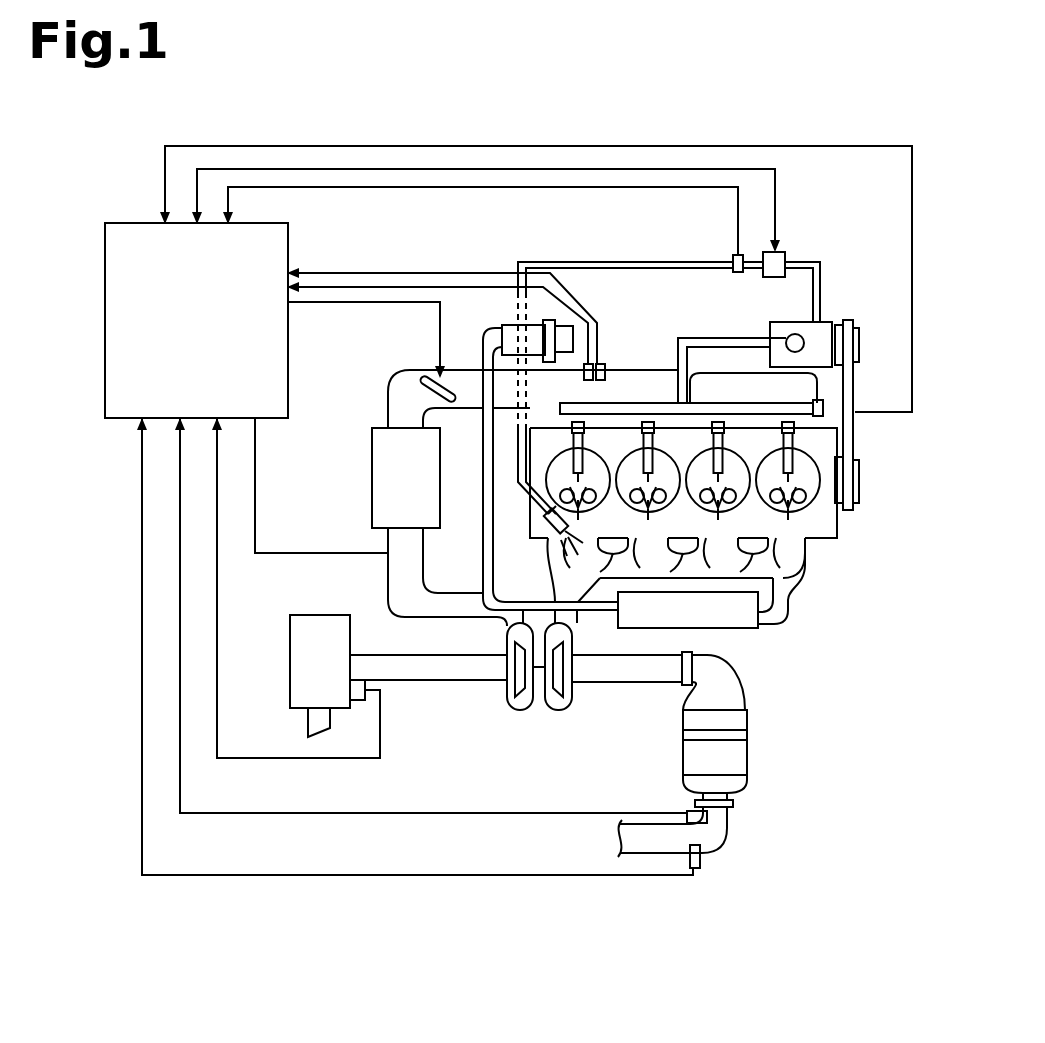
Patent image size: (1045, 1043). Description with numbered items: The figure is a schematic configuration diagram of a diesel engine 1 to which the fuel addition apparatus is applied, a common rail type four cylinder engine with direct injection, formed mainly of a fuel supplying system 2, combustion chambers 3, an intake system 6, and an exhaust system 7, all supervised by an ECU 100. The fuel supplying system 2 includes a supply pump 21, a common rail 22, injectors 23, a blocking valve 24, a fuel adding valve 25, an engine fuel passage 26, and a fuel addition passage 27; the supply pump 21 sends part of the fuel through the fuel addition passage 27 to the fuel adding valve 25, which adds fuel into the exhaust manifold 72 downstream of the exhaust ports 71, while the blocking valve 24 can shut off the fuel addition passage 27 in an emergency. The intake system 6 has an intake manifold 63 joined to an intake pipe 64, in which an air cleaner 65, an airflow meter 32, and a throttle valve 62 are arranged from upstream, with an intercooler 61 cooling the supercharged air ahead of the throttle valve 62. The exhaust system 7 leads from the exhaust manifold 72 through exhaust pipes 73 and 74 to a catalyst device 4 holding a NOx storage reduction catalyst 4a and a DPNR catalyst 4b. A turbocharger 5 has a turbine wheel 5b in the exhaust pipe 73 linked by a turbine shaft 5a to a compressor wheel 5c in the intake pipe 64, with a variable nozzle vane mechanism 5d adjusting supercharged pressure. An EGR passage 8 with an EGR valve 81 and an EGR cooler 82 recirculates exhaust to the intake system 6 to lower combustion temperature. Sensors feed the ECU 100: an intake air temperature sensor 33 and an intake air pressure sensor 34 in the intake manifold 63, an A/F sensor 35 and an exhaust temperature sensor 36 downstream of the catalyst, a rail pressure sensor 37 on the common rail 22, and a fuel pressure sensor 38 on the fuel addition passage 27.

The ECU 100 is at (143, 223).
The diesel engine 1 is at (845, 539).
The fuel supplying system 2 is at (833, 322).
The combustion chambers 3 is at (842, 518).
The catalyst device 4 is at (762, 733).
The NOx storage reduction catalyst 4a is at (746, 718).
The DPNR catalyst 4b is at (742, 760).
The turbocharger 5 is at (526, 710).
The turbine shaft 5a is at (507, 650).
The turbine wheel 5b is at (565, 708).
The compressor wheel 5c is at (518, 700).
The variable nozzle vane mechanism 5d is at (545, 705).
The intake system 6 is at (638, 362).
The exhaust system 7 is at (812, 558).
The EGR passage 8 is at (790, 605).
The supply pump 21 is at (798, 320).
The common rail 22 is at (815, 382).
The injectors 23 is at (843, 445).
The blocking valve 24 is at (788, 258).
The fuel adding valve 25 is at (538, 527).
The engine fuel passage 26 is at (733, 338).
The fuel addition passage 27 is at (592, 262).
The airflow meter 32 is at (358, 700).
The intake air temperature sensor 33 is at (495, 395).
The intake air pressure sensor 34 is at (606, 385).
The A/F sensor 35 is at (700, 860).
The exhaust temperature sensor 36 is at (693, 803).
The rail pressure sensor 37 is at (823, 409).
The fuel pressure sensor 38 is at (733, 258).
The intercooler 61 is at (372, 470).
The throttle valve 62 is at (428, 378).
The intake manifold 63 is at (853, 380).
The intake pipe 64 is at (400, 393).
The air cleaner 65 is at (290, 642).
The exhaust ports 71 is at (763, 545).
The exhaust manifold 72 is at (575, 583).
The exhaust pipe 73 is at (643, 657).
The exhaust pipe 74 is at (725, 830).
The EGR valve 81 is at (515, 327).
The EGR cooler 82 is at (728, 628).